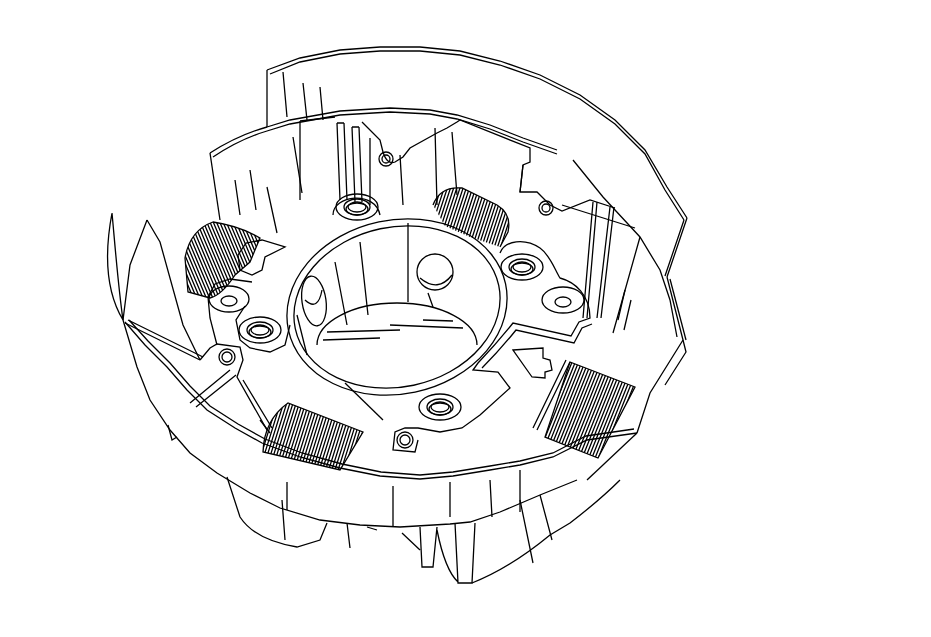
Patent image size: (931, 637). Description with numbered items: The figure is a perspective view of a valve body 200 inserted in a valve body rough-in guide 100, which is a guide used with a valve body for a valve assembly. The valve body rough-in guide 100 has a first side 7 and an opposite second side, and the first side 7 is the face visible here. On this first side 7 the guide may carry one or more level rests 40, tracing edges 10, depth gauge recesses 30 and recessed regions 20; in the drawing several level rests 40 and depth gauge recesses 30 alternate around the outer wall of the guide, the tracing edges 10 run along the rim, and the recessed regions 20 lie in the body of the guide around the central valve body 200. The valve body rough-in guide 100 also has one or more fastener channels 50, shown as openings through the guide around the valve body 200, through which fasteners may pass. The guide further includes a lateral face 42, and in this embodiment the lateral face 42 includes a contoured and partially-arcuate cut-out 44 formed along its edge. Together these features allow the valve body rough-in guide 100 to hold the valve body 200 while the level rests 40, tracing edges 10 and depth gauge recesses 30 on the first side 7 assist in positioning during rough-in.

The valve body rough-in guide 100 is at (685, 52).
The tracing edges 10 is at (290, 63).
The level rests 40 is at (266, 78).
The depth gauge recesses 30 is at (211, 153).
The contoured and partially-arcuate cut-out 44 is at (683, 357).
The lateral face 42 is at (557, 520).
The recessed regions 20 is at (493, 175).
The first side 7 is at (373, 112).
The fastener channels 50 is at (388, 155).
The valve body 200 is at (600, 183).